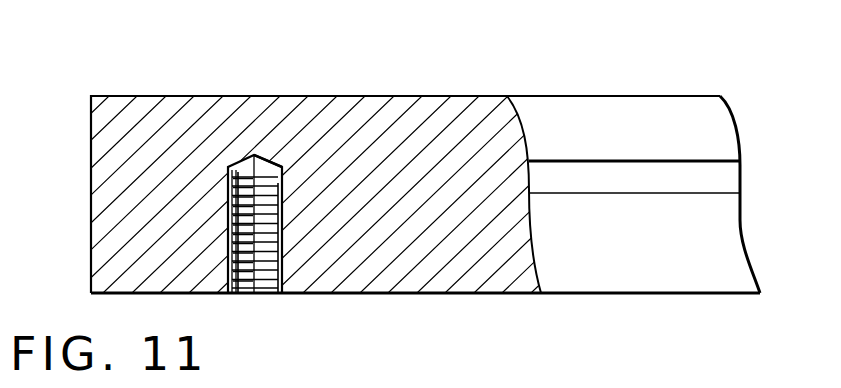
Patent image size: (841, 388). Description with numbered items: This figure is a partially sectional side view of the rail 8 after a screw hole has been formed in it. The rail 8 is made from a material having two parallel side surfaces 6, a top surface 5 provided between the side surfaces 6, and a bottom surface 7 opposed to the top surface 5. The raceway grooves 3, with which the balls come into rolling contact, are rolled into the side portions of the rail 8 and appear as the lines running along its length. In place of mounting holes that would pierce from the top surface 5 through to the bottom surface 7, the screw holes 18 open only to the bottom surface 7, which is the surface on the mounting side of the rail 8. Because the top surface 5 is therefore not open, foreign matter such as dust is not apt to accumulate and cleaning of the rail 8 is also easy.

The rail 8 is at (438, 88).
The raceway grooves 3 is at (567, 173).
The top surface 5 is at (655, 97).
The side surfaces 6 is at (698, 263).
The bottom surface 7 is at (585, 295).
The screw holes 18 is at (260, 277).